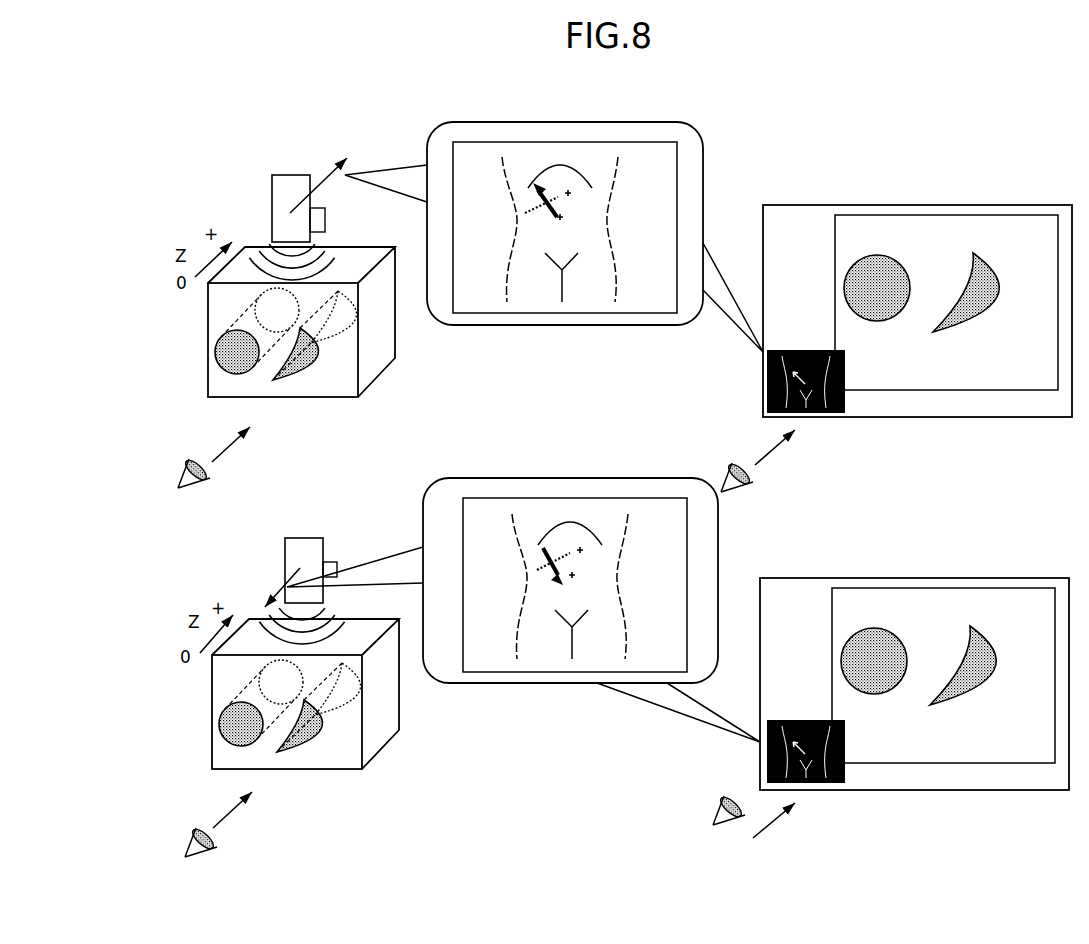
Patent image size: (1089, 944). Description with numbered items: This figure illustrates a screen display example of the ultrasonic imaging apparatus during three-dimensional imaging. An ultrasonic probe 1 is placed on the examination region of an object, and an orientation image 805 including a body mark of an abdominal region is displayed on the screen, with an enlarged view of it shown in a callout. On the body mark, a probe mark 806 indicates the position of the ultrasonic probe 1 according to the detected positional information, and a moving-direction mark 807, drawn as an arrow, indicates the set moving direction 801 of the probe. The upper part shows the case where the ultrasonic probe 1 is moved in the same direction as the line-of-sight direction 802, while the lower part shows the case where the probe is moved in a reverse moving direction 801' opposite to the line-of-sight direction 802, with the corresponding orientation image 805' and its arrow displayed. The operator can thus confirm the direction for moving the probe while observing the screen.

The ultrasonic probe 1 is at (275, 217).
The moving direction 801 is at (305, 171).
The moving direction 801' is at (253, 577).
The line-of-sight direction 802 is at (227, 453).
The orientation image 805 is at (595, 267).
The orientation image 805' is at (566, 630).
The probe mark 806 is at (530, 208).
The moving-direction mark 807 is at (536, 182).